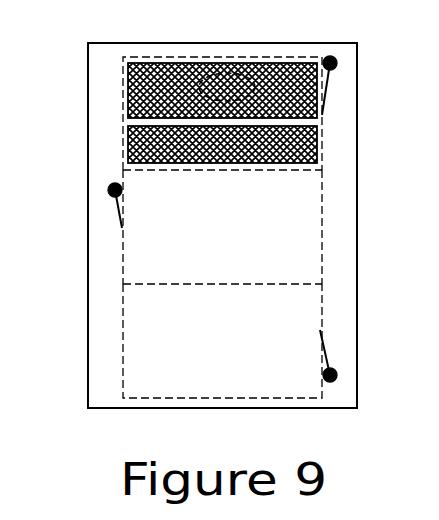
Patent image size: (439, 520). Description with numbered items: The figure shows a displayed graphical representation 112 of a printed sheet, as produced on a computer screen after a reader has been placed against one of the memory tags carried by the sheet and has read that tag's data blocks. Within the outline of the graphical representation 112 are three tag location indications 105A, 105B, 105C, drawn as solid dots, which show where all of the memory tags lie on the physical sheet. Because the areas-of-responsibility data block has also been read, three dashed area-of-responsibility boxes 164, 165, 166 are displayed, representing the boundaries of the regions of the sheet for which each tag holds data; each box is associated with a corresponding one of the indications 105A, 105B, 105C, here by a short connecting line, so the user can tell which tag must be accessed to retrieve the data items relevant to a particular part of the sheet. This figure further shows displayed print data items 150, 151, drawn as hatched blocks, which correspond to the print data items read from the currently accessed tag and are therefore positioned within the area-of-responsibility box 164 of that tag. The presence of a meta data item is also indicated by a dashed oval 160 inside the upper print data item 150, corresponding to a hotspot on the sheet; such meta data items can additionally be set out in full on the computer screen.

The graphical representation 112 is at (177, 35).
The dashed oval 160 is at (232, 75).
The tag location indication 105A is at (330, 63).
The tag location indication 105B is at (115, 190).
The tag location indication 105C is at (330, 375).
The displayed print data item 150 is at (316, 116).
The displayed print data item 151 is at (317, 153).
The area-of-responsibility box 164 is at (123, 118).
The area-of-responsibility box 165 is at (122, 260).
The area-of-responsibility box 166 is at (122, 357).